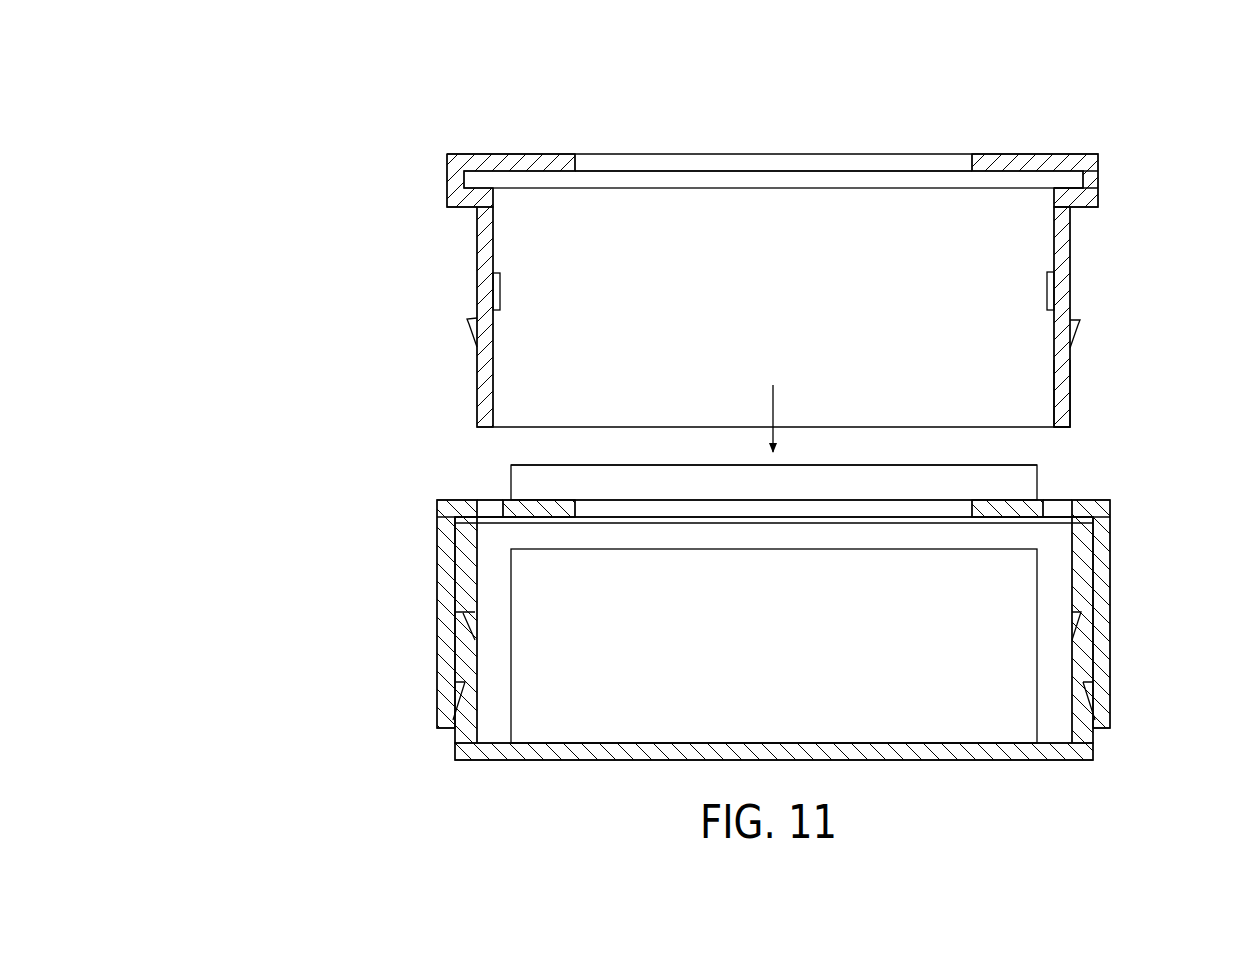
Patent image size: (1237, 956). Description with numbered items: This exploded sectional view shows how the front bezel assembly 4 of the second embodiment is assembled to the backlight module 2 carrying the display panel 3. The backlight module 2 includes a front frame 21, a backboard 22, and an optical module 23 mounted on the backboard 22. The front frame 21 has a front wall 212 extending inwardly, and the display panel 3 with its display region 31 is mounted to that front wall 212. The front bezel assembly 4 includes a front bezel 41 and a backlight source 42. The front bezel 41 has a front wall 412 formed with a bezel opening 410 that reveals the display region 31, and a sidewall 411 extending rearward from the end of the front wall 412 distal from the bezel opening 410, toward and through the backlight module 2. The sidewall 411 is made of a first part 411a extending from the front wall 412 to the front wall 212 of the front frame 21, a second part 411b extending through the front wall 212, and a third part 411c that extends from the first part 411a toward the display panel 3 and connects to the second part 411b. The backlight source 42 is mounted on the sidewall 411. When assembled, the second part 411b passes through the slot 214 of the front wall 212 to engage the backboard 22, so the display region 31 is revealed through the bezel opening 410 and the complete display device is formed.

The backlight module 2 is at (745, 613).
The front frame 21 is at (447, 670).
The backboard 22 is at (764, 603).
The optical module 23 is at (527, 733).
The front wall 212 is at (515, 515).
The slot 214 is at (490, 507).
The display panel 3 is at (774, 425).
The display region 31 is at (858, 465).
The front bezel assembly 4 is at (693, 254).
The front bezel 41 is at (715, 254).
The bezel opening 410 is at (633, 163).
The sidewall 411 is at (738, 294).
The first part 411a is at (1098, 180).
The second part 411b is at (1068, 382).
The third part 411c is at (1078, 197).
The front wall 412 is at (515, 158).
The backlight source 42 is at (493, 283).